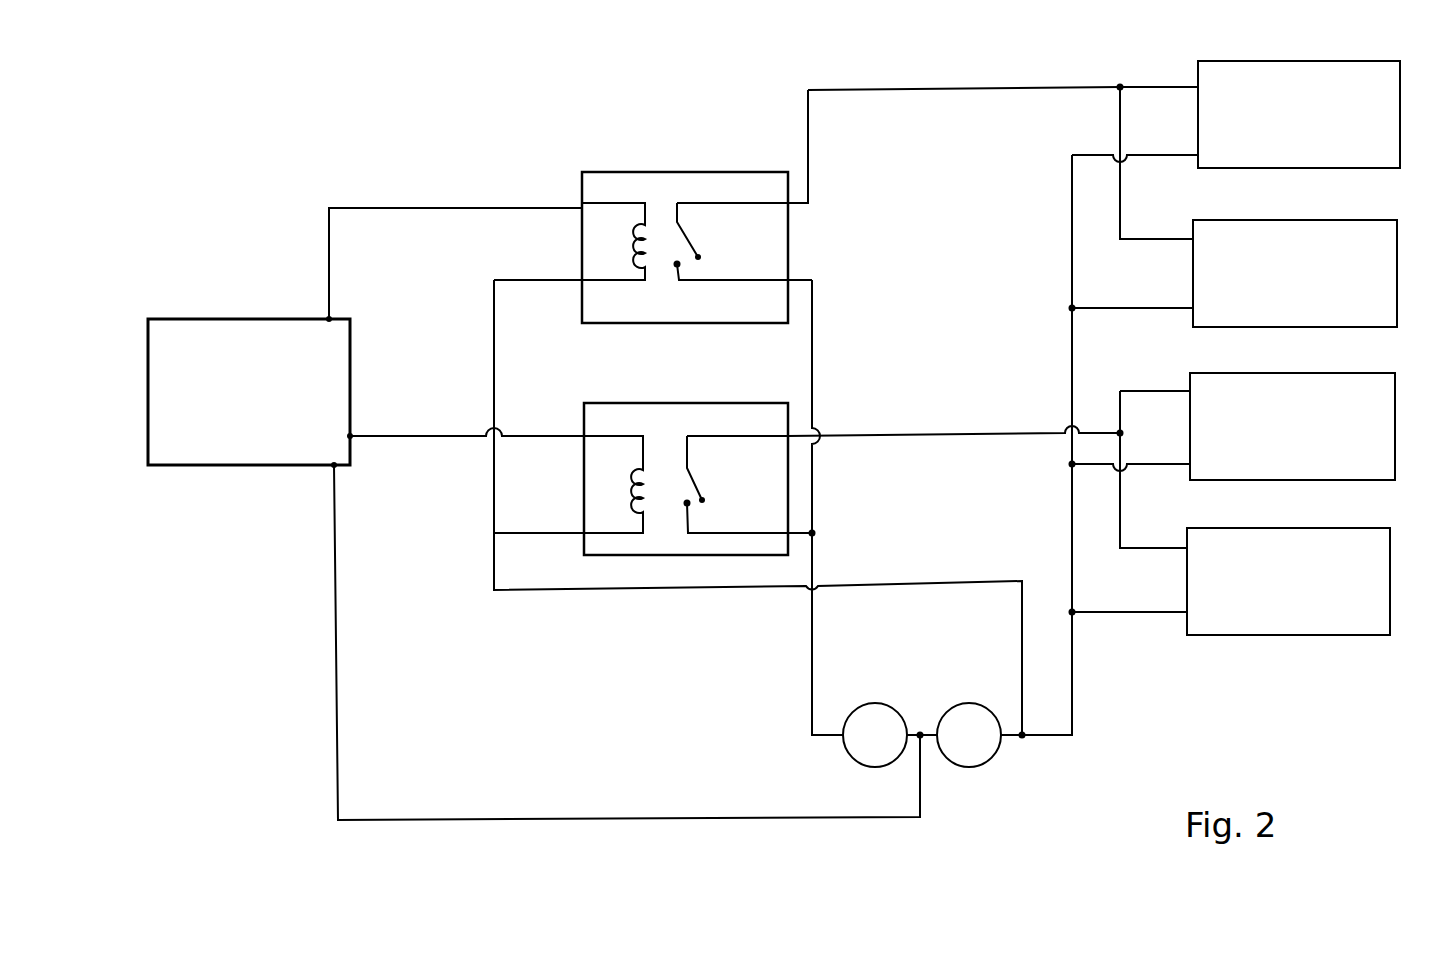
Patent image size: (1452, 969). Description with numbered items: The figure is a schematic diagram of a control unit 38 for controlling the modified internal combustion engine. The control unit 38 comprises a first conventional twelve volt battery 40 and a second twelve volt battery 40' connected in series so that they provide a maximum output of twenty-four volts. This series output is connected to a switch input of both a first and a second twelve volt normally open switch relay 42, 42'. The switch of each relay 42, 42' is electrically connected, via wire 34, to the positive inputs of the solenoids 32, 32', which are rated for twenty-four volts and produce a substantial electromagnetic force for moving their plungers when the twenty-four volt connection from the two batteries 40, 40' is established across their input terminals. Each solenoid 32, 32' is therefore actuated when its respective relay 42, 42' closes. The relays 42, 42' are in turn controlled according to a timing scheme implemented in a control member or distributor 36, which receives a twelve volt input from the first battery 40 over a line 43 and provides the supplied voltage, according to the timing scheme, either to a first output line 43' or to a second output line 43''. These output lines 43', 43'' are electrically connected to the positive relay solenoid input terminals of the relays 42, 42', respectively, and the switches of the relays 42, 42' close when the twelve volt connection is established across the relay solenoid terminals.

The solenoid 32 is at (1316, 348).
The solenoid 32' is at (1321, 273).
The wire 34 is at (1008, 87).
The distributor 36 is at (228, 317).
The control unit 38 is at (226, 760).
The first twelve volt battery 40 is at (981, 749).
The second twelve volt battery 40' is at (874, 749).
The first twelve volt normally open switch relay 42 is at (655, 462).
The second twelve volt normally open switch relay 42' is at (653, 206).
The line 43 is at (627, 641).
The first output line 43' is at (465, 415).
The second output line 43'' is at (454, 244).